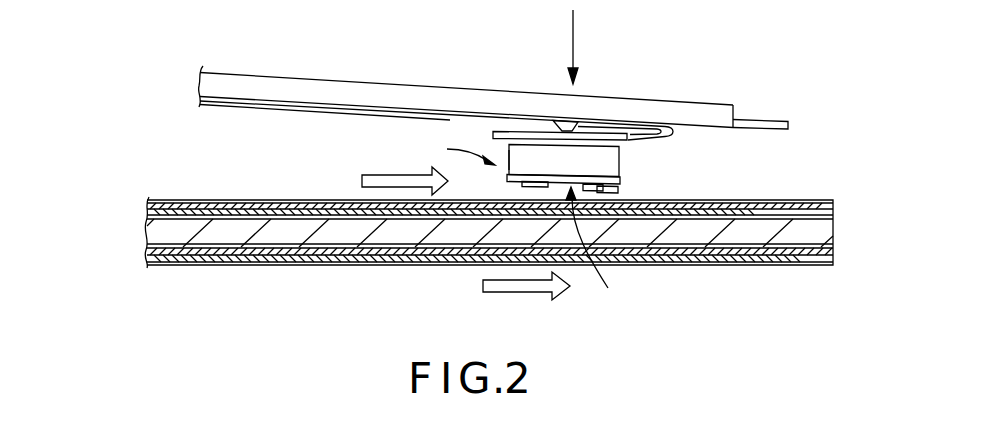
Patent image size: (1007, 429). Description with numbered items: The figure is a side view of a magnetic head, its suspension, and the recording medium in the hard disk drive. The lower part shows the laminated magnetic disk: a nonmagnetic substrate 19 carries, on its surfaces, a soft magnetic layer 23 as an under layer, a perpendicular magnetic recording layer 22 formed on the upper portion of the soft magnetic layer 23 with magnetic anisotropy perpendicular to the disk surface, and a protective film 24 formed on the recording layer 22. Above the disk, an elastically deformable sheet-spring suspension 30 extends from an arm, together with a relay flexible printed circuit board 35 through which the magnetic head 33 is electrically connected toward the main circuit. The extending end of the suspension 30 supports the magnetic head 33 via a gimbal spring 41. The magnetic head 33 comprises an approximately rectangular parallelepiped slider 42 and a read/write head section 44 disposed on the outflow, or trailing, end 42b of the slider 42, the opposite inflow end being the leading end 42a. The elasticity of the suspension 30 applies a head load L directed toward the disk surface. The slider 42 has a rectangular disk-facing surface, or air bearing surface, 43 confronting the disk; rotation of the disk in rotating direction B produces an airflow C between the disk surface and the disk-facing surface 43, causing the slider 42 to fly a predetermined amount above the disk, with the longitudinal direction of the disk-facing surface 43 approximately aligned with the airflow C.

The substrate 19 is at (454, 238).
The perpendicular magnetic recording layer 22 is at (220, 203).
The soft magnetic layer 23 is at (143, 222).
The protective film 24 is at (155, 198).
The suspension 30 is at (320, 88).
The magnetic head 33 is at (455, 150).
The relay flexible printed circuit board 35 is at (252, 107).
The gimbal spring 41 is at (507, 131).
The slider 42 is at (590, 155).
The leading end 42a is at (507, 158).
The trailing end 42b is at (615, 165).
The disk-facing surface 43 is at (593, 249).
The read/write head section 44 is at (615, 193).
The head load L is at (574, 42).
The airflow C is at (394, 181).
The rotating direction B is at (526, 298).